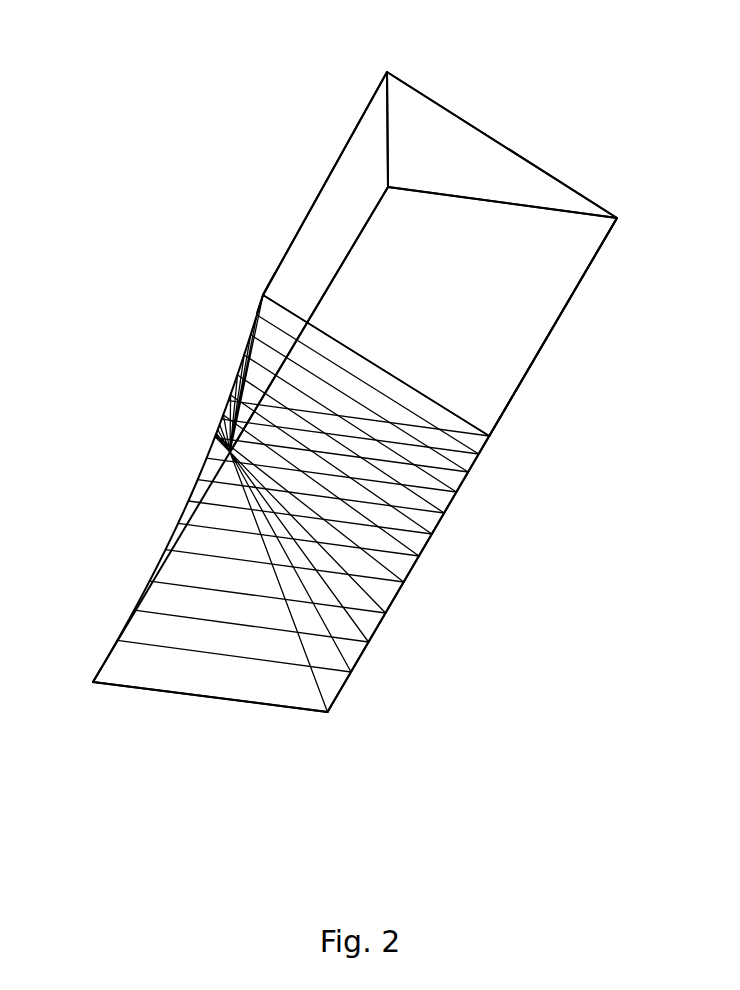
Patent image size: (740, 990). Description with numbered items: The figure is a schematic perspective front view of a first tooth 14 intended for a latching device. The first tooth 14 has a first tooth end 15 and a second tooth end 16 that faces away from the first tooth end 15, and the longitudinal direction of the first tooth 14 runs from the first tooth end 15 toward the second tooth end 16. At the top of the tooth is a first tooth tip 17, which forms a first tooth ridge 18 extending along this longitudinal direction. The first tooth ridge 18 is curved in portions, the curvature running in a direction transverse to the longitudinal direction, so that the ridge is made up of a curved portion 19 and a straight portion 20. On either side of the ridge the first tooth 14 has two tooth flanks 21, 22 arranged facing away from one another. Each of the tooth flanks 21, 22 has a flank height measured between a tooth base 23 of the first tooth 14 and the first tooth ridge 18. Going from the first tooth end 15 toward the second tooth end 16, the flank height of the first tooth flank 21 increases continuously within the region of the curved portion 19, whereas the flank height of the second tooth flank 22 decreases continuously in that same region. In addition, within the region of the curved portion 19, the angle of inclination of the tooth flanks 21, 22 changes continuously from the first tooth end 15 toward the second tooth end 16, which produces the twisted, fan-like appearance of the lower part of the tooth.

The first tooth 14 is at (240, 112).
The first tooth end 15 is at (179, 725).
The second tooth end 16 is at (534, 103).
The first tooth tip 17 is at (356, 116).
The first tooth ridge 18 is at (268, 286).
The curved portion 19 is at (200, 415).
The straight portion 20 is at (288, 218).
The first tooth flank 21 is at (466, 357).
The second tooth flank 22 is at (200, 502).
The tooth base 23 is at (371, 663).